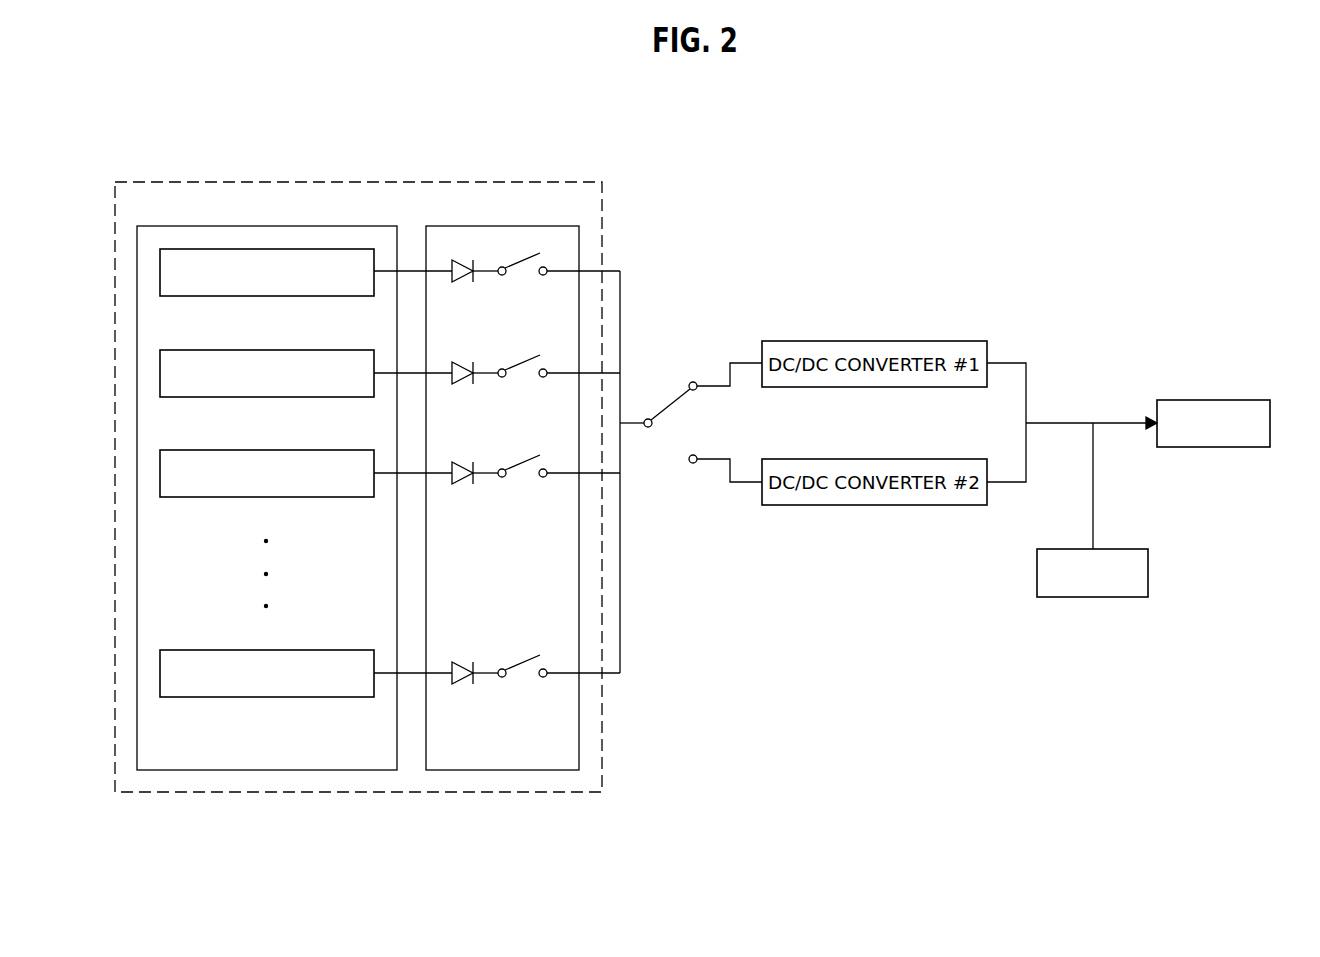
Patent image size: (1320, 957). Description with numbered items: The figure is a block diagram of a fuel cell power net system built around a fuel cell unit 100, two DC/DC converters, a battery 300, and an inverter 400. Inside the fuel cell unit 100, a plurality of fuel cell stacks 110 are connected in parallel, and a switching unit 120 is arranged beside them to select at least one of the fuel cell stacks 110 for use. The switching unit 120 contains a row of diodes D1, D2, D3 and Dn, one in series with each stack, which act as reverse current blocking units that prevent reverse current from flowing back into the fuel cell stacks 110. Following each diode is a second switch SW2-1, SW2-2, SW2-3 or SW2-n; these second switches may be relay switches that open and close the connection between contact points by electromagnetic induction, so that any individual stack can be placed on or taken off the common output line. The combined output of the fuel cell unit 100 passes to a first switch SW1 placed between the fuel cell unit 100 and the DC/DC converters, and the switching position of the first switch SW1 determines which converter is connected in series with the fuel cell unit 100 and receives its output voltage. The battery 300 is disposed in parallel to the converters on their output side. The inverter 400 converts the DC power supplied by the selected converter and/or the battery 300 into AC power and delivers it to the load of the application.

The fuel cell unit 100 is at (440, 183).
The fuel cell stacks 110 is at (335, 226).
The switching unit 120 is at (515, 227).
The battery 300 is at (1113, 549).
The inverter 400 is at (1240, 400).
The diode D1 is at (467, 283).
The diode D2 is at (467, 385).
The diode D3 is at (467, 485).
The diode Dn is at (467, 685).
The first switch SW1 is at (689, 422).
The second switch SW2-1 is at (527, 278).
The second switch SW2-2 is at (527, 380).
The second switch SW2-3 is at (527, 480).
The second switch SW2-n is at (527, 680).